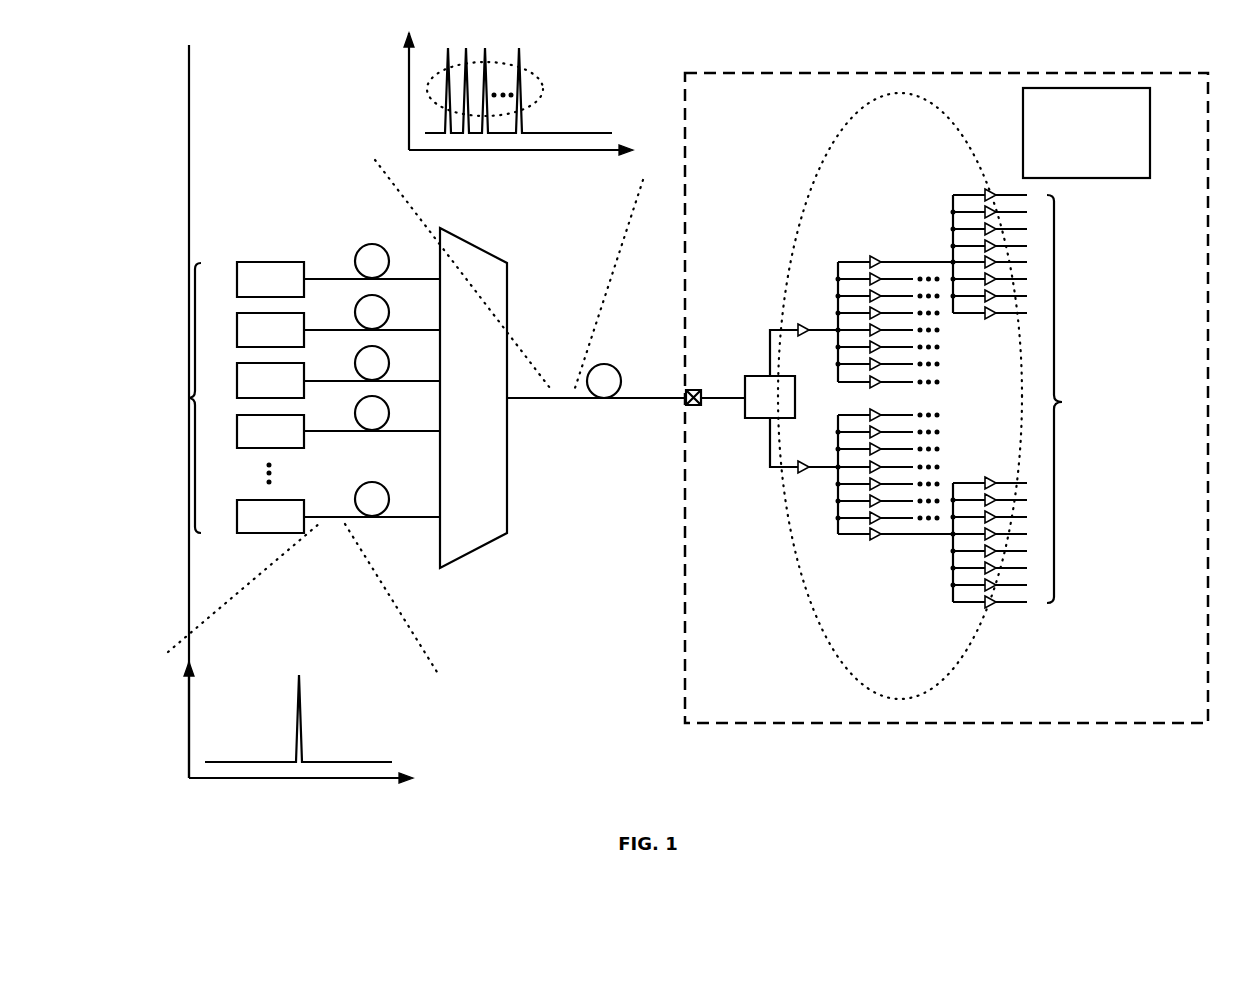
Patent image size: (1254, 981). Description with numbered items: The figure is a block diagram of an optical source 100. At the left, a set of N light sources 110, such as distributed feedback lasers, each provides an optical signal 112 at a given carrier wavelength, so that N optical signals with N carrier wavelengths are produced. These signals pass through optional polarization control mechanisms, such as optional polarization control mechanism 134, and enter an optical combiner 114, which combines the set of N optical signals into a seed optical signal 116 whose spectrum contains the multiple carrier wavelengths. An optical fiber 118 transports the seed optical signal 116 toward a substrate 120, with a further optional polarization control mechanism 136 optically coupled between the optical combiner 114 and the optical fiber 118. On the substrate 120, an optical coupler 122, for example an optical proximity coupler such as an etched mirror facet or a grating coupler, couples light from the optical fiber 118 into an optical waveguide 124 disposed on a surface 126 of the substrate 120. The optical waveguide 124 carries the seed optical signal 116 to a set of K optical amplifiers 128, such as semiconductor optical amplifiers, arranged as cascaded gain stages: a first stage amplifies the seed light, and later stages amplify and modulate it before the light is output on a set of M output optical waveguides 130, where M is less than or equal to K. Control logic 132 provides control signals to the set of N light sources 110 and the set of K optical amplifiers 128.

The optical source 100 is at (254, 55).
The set of N light sources 110 is at (261, 397).
The optical signal 112 is at (300, 723).
The optical combiner 114 is at (458, 560).
The seed optical signal 116 is at (537, 82).
The optical fiber 118 is at (660, 398).
The substrate 120 is at (724, 121).
The optical coupler 122 is at (700, 413).
The optical waveguide 124 is at (724, 393).
The surface 126 is at (797, 690).
The set of K optical amplifiers 128 is at (992, 628).
The set of M output optical waveguides 130 is at (1094, 399).
The control logic 132 is at (1071, 165).
The optional polarization control mechanism 134 is at (370, 258).
The optional polarization control mechanism 136 is at (602, 383).